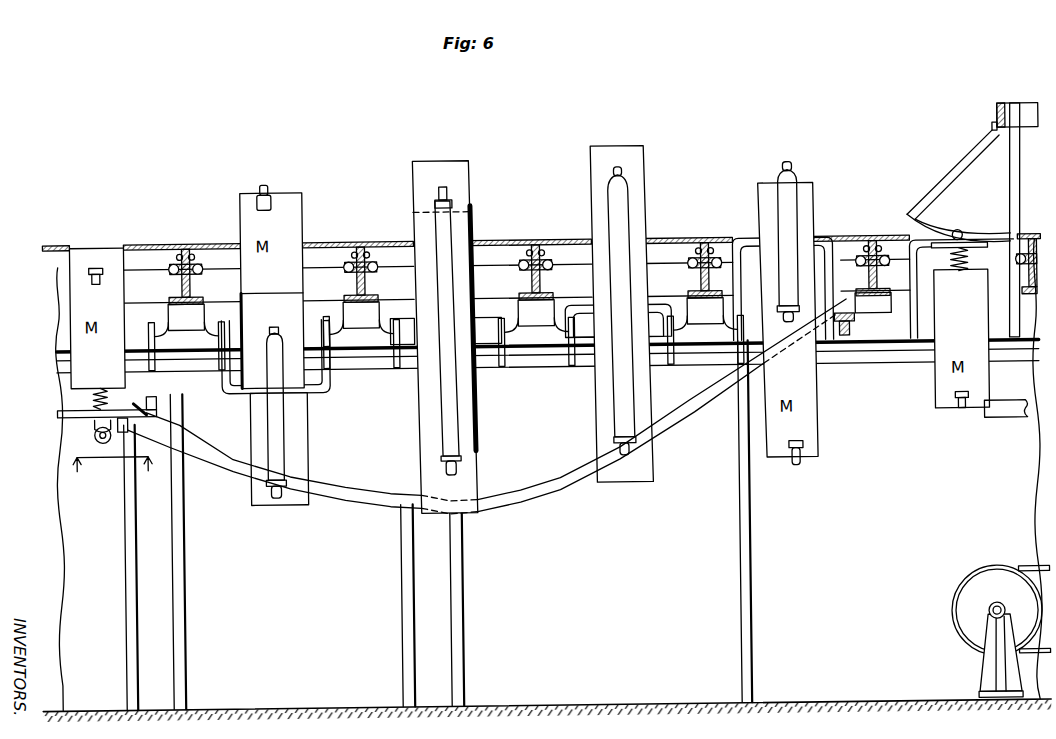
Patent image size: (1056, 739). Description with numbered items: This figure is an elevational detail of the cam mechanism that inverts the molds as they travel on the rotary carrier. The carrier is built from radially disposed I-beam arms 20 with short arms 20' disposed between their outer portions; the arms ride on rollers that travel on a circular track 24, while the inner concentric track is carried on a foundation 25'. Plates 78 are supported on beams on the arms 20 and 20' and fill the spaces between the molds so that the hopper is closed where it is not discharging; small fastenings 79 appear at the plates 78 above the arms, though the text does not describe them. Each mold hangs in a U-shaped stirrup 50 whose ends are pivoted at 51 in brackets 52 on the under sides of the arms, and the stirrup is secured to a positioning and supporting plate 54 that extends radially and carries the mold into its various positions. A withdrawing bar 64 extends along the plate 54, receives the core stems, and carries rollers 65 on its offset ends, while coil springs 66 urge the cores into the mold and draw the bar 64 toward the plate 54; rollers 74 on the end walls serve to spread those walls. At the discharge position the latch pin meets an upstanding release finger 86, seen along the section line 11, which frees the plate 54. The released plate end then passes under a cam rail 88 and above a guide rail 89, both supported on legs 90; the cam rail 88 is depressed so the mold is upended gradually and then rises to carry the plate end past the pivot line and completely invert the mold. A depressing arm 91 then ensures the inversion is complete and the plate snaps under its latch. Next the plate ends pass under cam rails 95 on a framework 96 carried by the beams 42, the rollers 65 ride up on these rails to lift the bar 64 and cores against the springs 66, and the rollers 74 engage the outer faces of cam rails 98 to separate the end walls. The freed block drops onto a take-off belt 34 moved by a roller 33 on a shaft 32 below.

The section line 11— 11 is at (113, 477).
The radially disposed arms 20 is at (519, 272).
The short arms 20' is at (690, 271).
The circular track 24 is at (513, 356).
The foundation 25' is at (44, 490).
The shaft 32 is at (990, 618).
The roller 33 is at (975, 593).
The take-off belt 34 is at (1020, 572).
The beams 42 is at (992, 108).
The U-shaped stirrup 50 is at (330, 393).
The pivot 51 is at (322, 330).
The brackets 52 is at (520, 331).
The positioning and supporting plate 54 is at (60, 402).
The withdrawing bar 64 is at (278, 438).
The rollers 65 is at (451, 192).
The coil springs 66 is at (973, 278).
The rollers 74 is at (92, 277).
The plates 78 is at (143, 243).
The clamp nut 79 is at (200, 252).
The release finger 86 is at (123, 428).
The cam rail 88 is at (193, 428).
The guide rail 89 is at (213, 460).
The legs 90 is at (127, 565).
The depressing arm 91 is at (930, 224).
The cam rails 95 is at (1004, 234).
The framework 96 is at (1026, 130).
The cam rails 98 is at (1013, 410).